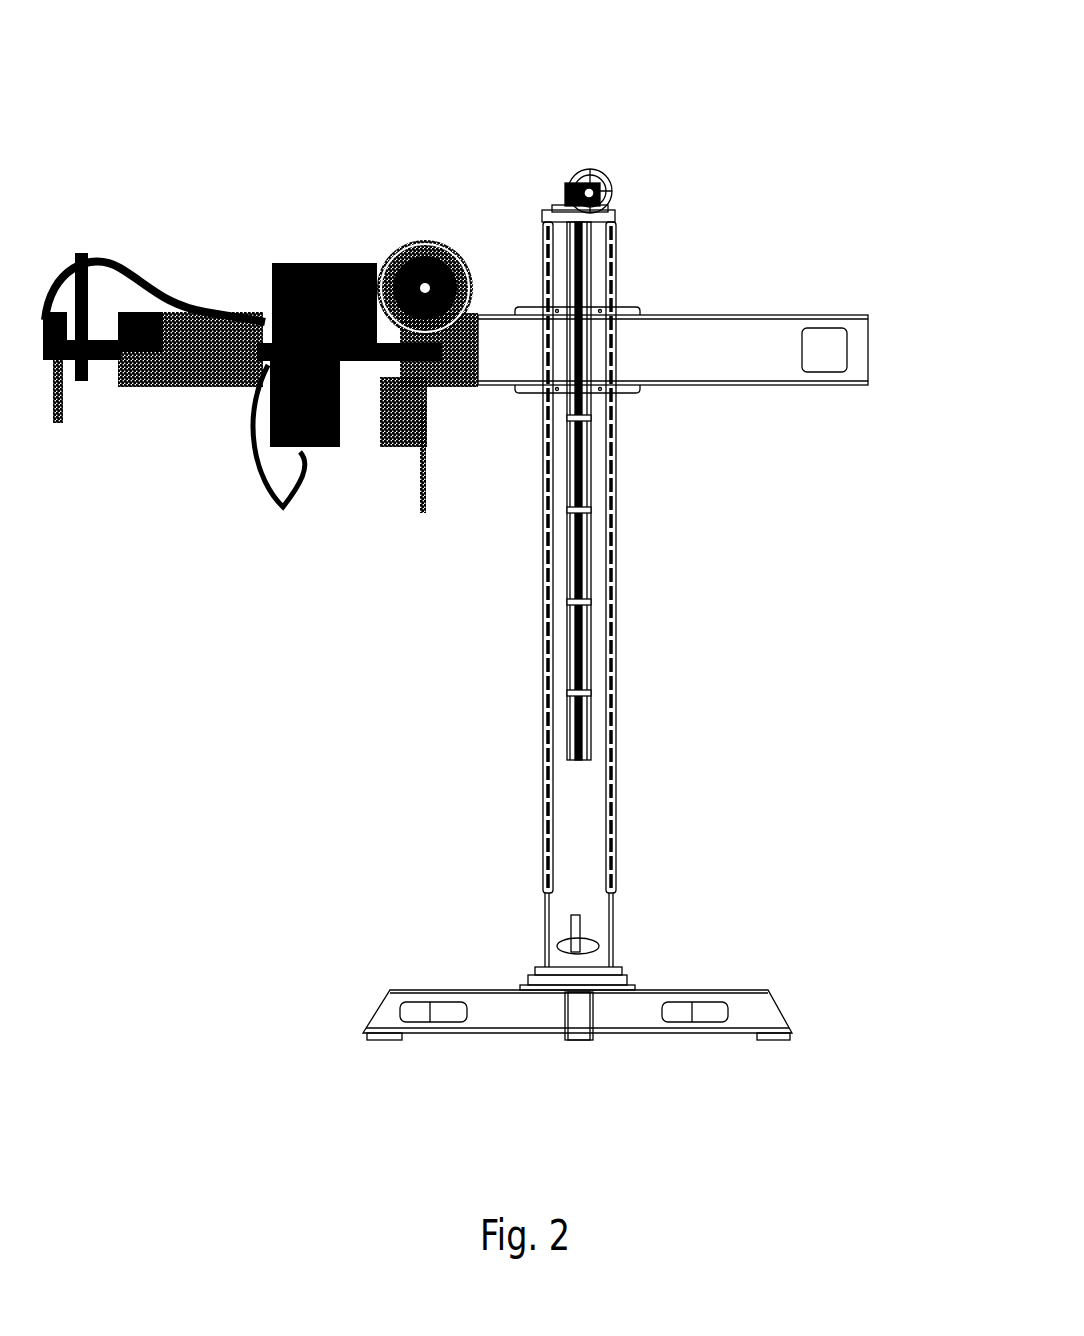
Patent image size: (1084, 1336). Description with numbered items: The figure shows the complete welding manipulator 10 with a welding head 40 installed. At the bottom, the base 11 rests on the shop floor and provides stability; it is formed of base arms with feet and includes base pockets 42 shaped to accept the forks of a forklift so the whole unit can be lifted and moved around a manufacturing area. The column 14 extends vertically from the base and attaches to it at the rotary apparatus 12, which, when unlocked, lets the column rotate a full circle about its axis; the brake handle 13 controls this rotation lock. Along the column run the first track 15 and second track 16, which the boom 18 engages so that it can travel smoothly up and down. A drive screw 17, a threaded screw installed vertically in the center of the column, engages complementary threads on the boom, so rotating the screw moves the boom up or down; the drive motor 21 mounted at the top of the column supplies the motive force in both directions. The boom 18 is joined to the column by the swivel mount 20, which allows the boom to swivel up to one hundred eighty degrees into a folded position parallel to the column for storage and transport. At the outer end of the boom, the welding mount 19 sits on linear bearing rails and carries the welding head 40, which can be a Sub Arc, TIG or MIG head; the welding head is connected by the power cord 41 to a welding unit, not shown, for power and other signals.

The welding manipulator 10 is at (847, 123).
The base 11 is at (735, 987).
The rotary apparatus 12 is at (623, 972).
The brake handle 13 is at (570, 935).
The column 14 is at (572, 787).
The first track 15 is at (610, 715).
The second track 16 is at (542, 633).
The drive screw 17 is at (578, 573).
The boom 18 is at (718, 345).
The welding mount 19 is at (481, 328).
The swivel mount 20 is at (628, 310).
The drive motor 21 is at (603, 180).
The welding head 40 is at (308, 257).
The power cord 41 is at (407, 510).
The base pockets 42 is at (452, 1017).